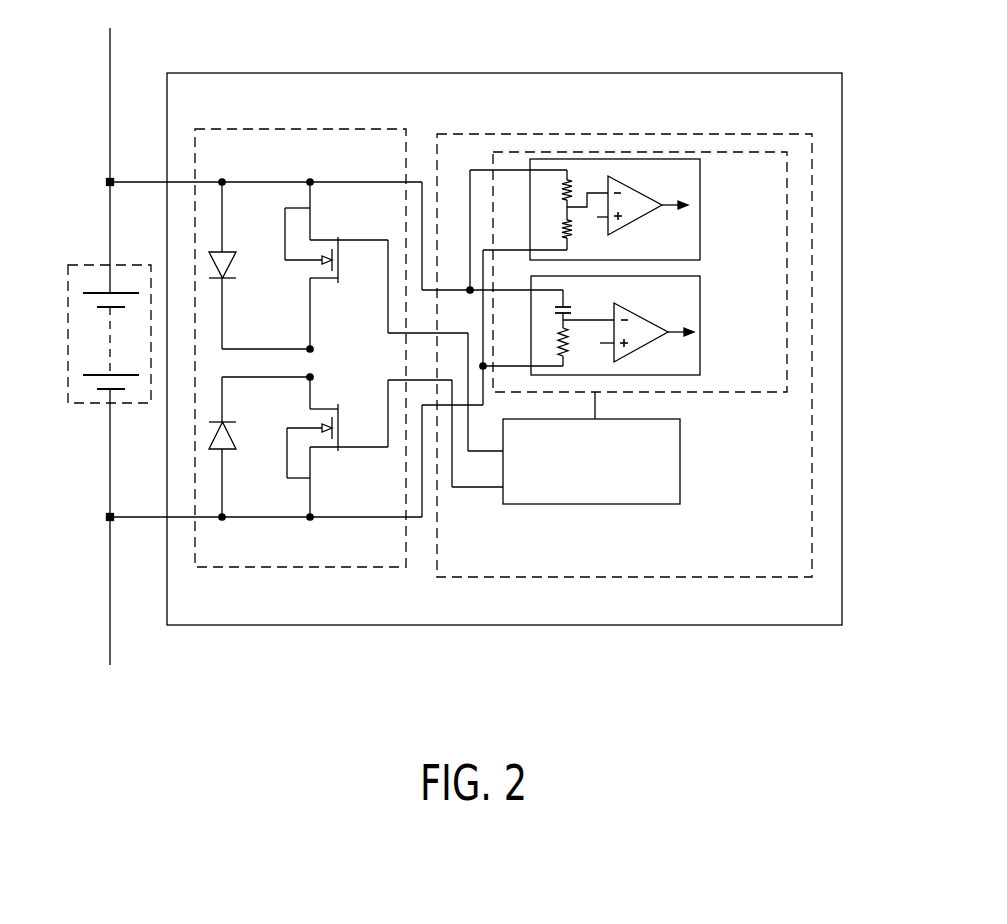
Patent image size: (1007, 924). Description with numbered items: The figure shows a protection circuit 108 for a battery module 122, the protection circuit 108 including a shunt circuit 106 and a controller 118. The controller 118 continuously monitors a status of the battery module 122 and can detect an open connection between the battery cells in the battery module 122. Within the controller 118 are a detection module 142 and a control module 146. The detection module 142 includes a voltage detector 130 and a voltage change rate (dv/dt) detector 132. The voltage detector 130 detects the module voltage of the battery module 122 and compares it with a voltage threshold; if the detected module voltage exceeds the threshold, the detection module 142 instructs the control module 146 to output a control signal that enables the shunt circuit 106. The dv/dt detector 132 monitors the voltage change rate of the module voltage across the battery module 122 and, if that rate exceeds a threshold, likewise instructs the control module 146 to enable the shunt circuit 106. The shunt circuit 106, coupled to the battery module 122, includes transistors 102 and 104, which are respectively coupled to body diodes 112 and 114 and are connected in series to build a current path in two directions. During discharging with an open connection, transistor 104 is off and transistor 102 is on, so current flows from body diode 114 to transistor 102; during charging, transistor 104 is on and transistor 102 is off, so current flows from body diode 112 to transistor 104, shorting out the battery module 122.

The transistor 102 is at (318, 240).
The transistor 104 is at (336, 451).
The shunt circuit 106 is at (330, 129).
The protection circuit 108 is at (363, 73).
The body diode 112 is at (222, 278).
The body diode 114 is at (222, 422).
The controller 118 is at (710, 134).
The battery module 122 is at (100, 265).
The voltage detector 130 is at (700, 207).
The voltage change rate (dv/dt) detector 132 is at (700, 320).
The detection module 142 is at (670, 392).
The control module 146 is at (645, 504).